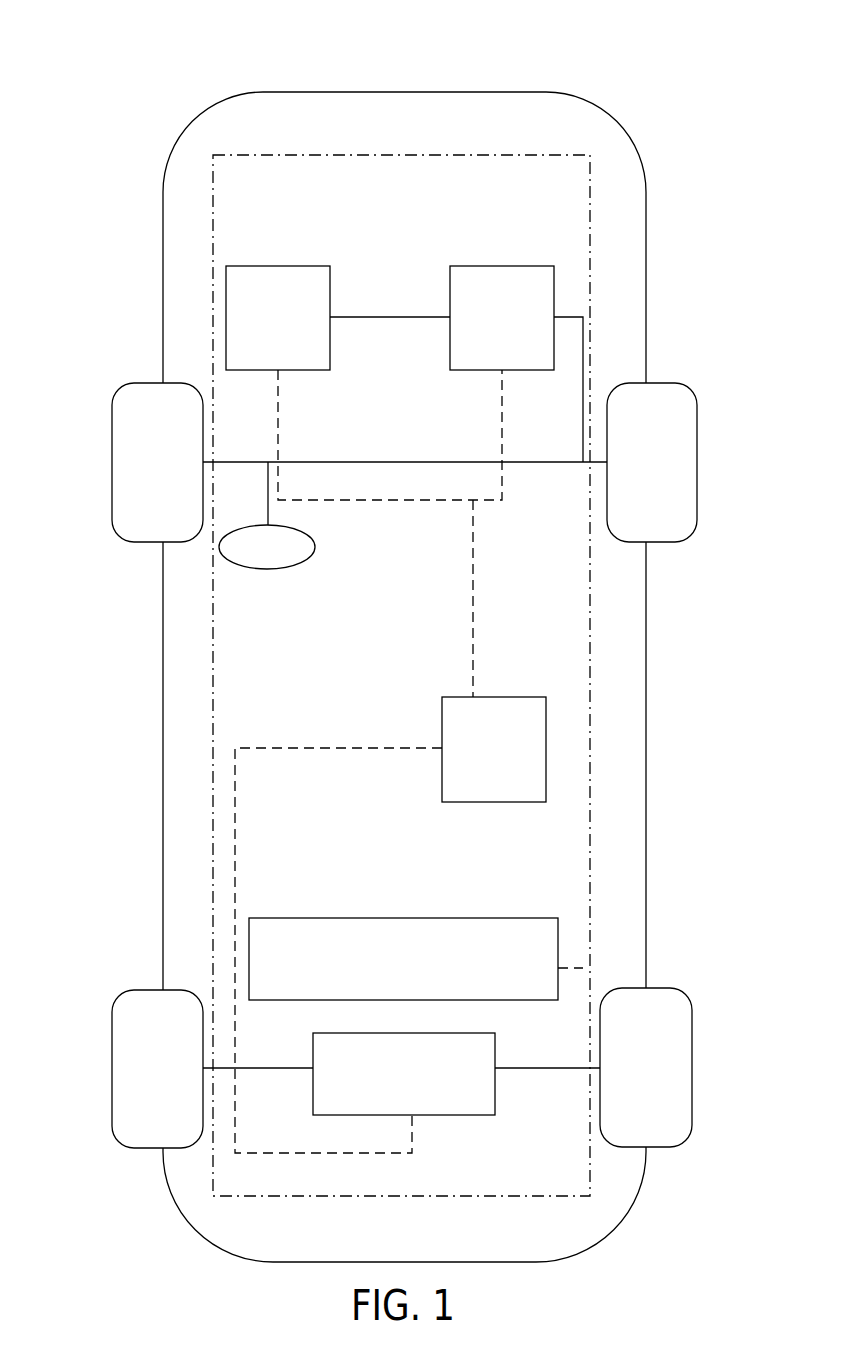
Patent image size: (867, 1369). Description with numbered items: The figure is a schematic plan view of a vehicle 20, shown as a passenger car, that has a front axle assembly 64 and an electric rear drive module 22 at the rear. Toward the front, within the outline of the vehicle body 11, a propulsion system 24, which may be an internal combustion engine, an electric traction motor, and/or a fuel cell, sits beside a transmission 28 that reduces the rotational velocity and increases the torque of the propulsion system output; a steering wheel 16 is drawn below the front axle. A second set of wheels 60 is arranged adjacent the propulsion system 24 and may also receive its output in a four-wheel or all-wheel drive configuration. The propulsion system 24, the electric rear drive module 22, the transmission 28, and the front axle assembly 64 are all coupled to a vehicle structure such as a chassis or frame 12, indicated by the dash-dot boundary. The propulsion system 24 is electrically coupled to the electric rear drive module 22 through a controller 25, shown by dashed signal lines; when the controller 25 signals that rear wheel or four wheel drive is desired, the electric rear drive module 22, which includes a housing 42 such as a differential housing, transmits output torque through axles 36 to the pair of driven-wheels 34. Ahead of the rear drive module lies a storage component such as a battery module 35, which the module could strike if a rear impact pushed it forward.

The vehicle 20 is at (656, 82).
The vehicle body 11 is at (646, 635).
The chassis or frame 12 is at (590, 790).
The second set of wheels 60 is at (112, 438).
The driven-wheels 34 is at (112, 1030).
The front axle assembly 64 is at (412, 250).
The propulsion system 24 is at (277, 266).
The transmission 28 is at (502, 266).
The steering wheel 16 is at (265, 572).
The controller 25 is at (493, 697).
The battery module 35 is at (488, 918).
The housing 42 is at (483, 1115).
The axles 36 is at (298, 1068).
The electric rear drive module 22 is at (466, 1166).